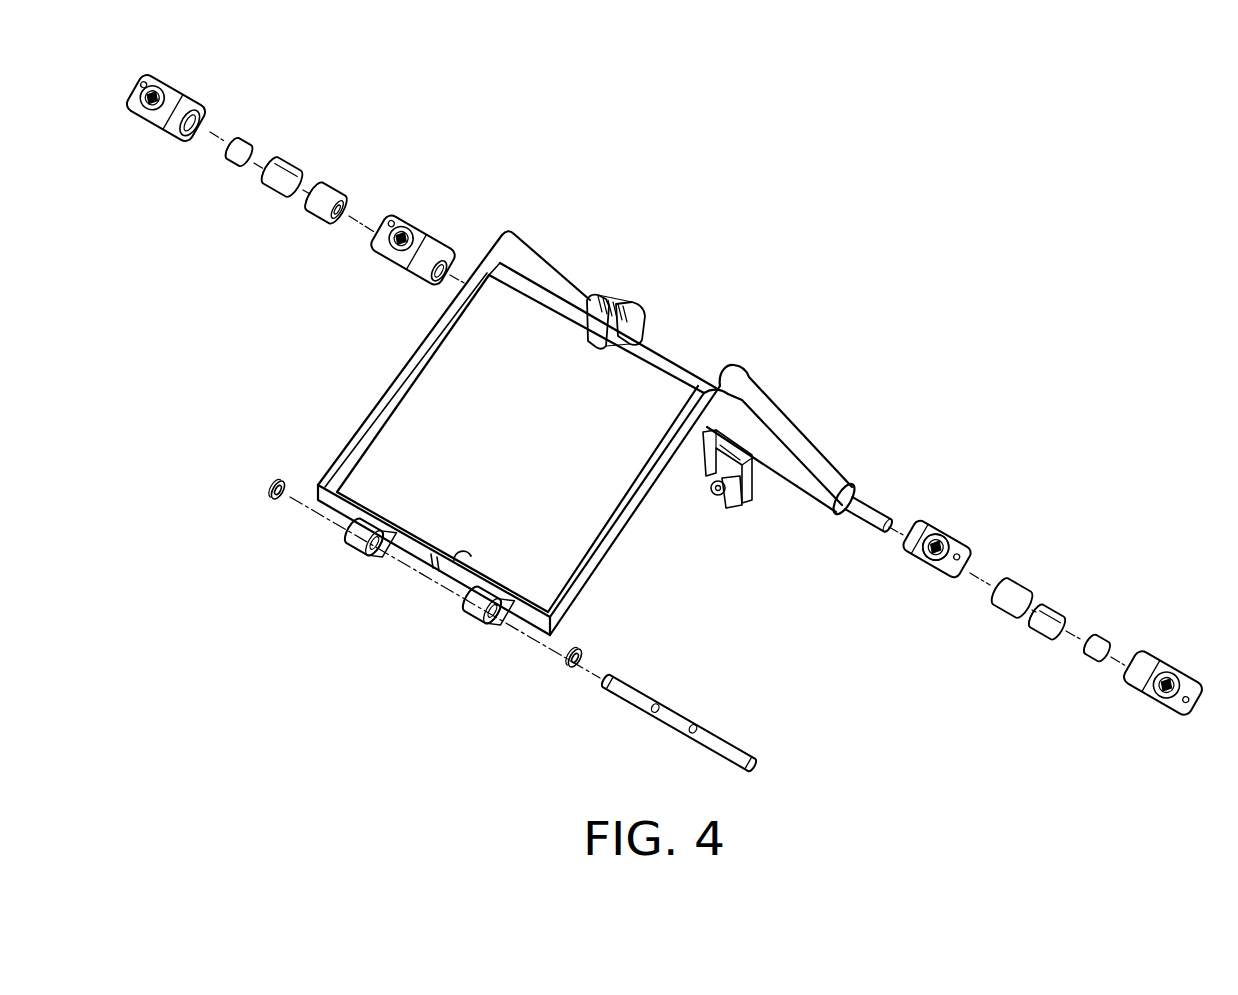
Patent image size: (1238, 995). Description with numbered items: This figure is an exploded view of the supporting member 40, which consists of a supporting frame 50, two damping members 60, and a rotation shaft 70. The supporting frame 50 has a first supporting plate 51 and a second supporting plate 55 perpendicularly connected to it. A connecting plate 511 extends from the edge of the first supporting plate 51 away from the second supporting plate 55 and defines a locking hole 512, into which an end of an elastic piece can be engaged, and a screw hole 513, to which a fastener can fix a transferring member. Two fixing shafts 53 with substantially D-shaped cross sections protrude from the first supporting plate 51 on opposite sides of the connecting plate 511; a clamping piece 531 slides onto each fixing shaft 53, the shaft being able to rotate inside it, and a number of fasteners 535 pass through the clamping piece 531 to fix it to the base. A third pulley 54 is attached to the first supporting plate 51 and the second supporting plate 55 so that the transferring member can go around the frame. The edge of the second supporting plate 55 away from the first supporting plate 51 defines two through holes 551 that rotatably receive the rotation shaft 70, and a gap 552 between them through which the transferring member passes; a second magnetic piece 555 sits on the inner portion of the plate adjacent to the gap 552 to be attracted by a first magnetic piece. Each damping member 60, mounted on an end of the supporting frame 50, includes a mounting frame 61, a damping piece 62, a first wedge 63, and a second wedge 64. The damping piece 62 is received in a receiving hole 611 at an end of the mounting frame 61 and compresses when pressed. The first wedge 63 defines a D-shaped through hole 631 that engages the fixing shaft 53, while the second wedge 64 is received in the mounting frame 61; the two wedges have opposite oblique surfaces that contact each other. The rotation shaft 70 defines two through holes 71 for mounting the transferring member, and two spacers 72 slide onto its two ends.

The supporting member 40 is at (754, 116).
The supporting frame 50 is at (548, 210).
The first supporting plate 51 is at (760, 410).
The fixing shaft 53 is at (866, 510).
The third pulley 54 is at (620, 303).
The second supporting plate 55 is at (428, 422).
The connecting plate 511 is at (748, 470).
The locking hole 512 is at (735, 500).
The screw hole 513 is at (715, 492).
The clamping piece 531 is at (952, 515).
The fastener 535 is at (942, 570).
The through hole 551 is at (365, 548).
The gap 552 is at (432, 562).
The second magnetic piece 555 is at (463, 560).
The damping member 60 is at (254, 70).
The mounting frame 61 is at (177, 105).
The receiving hole 611 is at (197, 132).
The damping piece 62 is at (250, 146).
The first wedge 63 is at (327, 192).
The through hole 631 is at (344, 217).
The second wedge 64 is at (284, 172).
The rotation shaft 70 is at (622, 688).
The through hole 71 is at (698, 724).
The spacer 72 is at (268, 490).